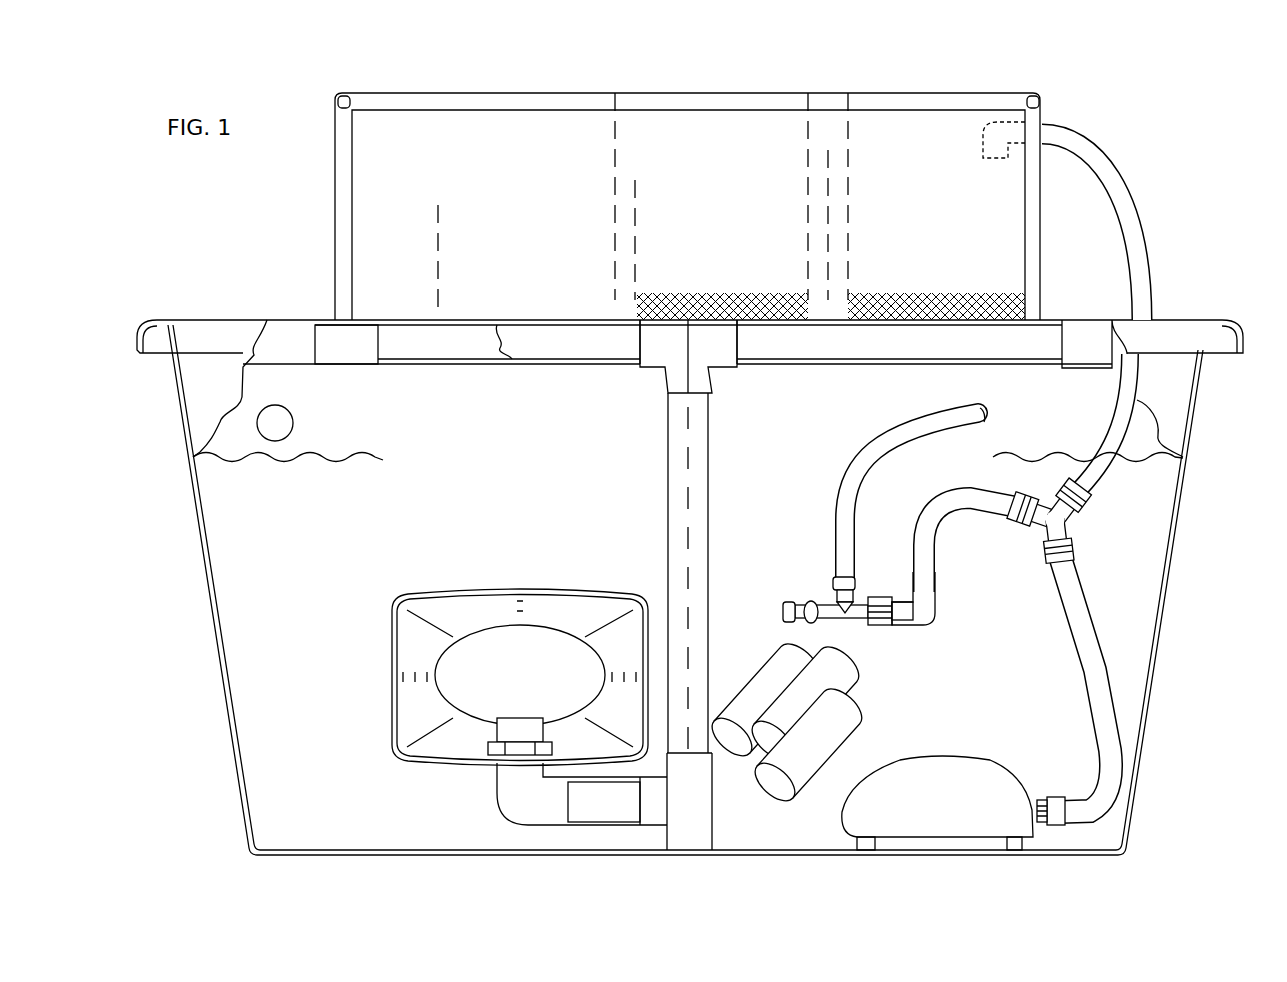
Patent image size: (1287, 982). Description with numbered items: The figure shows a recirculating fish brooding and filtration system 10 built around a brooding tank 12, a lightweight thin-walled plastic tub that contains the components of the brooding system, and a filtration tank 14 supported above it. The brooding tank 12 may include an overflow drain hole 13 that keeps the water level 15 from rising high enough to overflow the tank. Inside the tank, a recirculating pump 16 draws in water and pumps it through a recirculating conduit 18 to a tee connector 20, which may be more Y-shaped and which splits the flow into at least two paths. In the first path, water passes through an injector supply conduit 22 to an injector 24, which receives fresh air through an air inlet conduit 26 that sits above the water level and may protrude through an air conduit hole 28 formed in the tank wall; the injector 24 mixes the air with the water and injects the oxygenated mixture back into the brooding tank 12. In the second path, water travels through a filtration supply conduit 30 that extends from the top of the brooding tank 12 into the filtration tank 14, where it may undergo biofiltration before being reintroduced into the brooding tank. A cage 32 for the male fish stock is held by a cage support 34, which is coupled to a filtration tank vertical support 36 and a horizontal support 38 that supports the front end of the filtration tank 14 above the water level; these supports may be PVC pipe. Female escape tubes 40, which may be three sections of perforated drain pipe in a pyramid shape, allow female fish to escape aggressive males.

The recirculating fish brooding and filtration system 10 is at (573, 60).
The brooding tank 12 is at (1177, 678).
The overflow drain hole 13 is at (297, 423).
The filtration tank 14 is at (333, 241).
The water level 15 is at (272, 462).
The recirculating pump 16 is at (920, 753).
The recirculating conduit 18 is at (1062, 603).
The tee connector 20 is at (1070, 525).
The injector supply conduit 22 is at (973, 513).
The injector 24 is at (873, 628).
The air inlet conduit 26 is at (857, 470).
The air conduit hole 28 is at (987, 410).
The filtration supply conduit 30 is at (1152, 227).
The cage 32 is at (483, 590).
The cage support 34 is at (493, 782).
The filtration tank vertical support 36 is at (665, 482).
The horizontal support 38 is at (597, 367).
The female escape tubes 40 is at (725, 718).